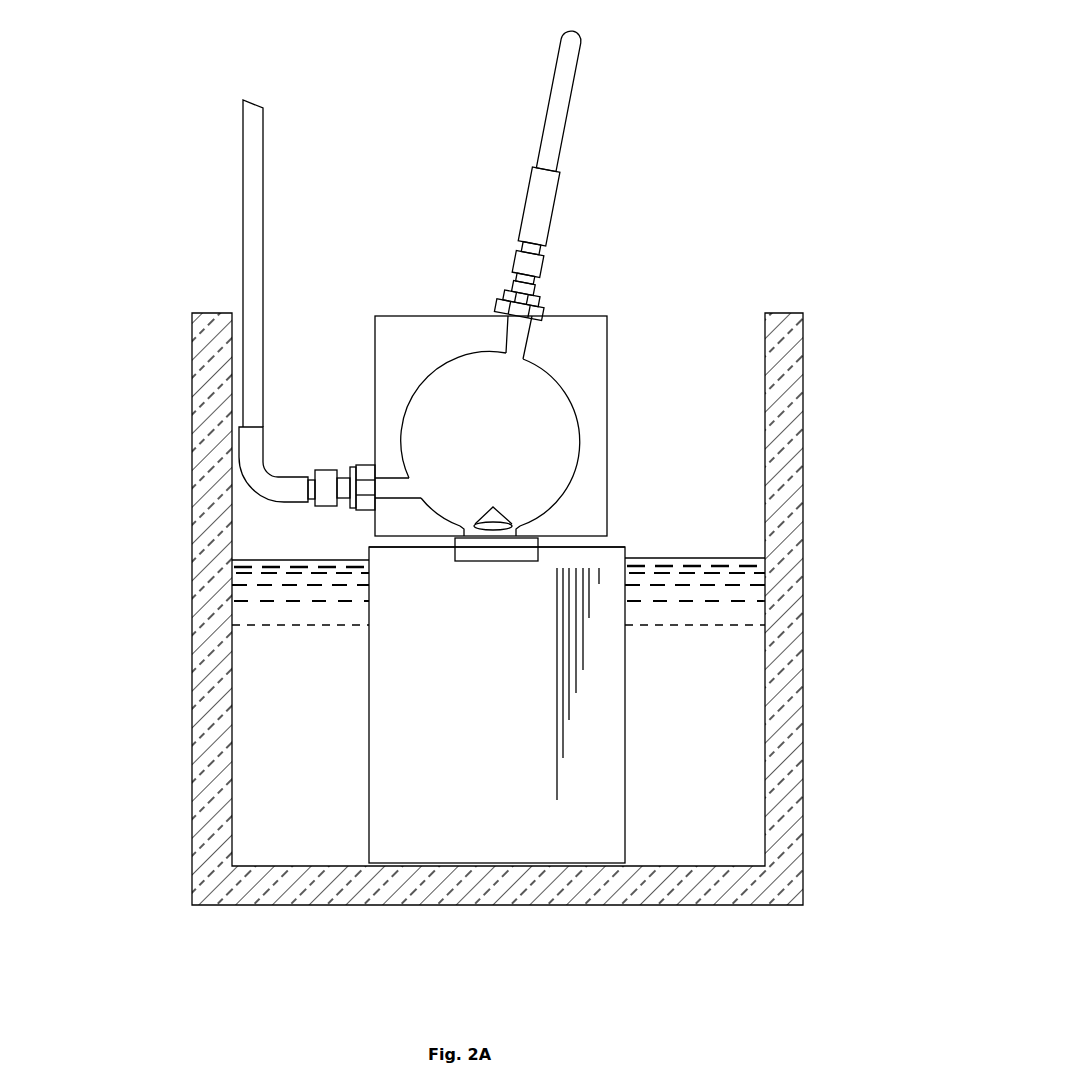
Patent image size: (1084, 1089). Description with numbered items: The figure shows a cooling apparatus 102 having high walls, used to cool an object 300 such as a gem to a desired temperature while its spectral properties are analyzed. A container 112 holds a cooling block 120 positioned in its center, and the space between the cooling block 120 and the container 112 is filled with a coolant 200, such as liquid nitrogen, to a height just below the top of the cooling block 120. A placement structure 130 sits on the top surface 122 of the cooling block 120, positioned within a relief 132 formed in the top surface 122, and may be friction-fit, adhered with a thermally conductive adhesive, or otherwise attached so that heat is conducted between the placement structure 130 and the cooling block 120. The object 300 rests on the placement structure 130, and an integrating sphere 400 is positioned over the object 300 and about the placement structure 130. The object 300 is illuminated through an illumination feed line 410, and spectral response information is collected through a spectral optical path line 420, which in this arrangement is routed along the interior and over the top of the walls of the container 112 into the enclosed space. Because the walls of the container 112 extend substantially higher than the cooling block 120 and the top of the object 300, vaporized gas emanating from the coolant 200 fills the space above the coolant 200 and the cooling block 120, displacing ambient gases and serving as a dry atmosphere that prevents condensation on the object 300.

The cooling apparatus 102 is at (131, 611).
The container 112 is at (786, 600).
The cooling block 120 is at (612, 572).
The top surface 122 is at (380, 548).
The placement structure 130 is at (520, 548).
The relief 132 is at (502, 563).
The coolant 200 is at (717, 558).
The object 300 is at (490, 515).
The integrating sphere 400 is at (582, 353).
The illumination feed line 410 is at (566, 103).
The spectral optical path line 420 is at (252, 265).